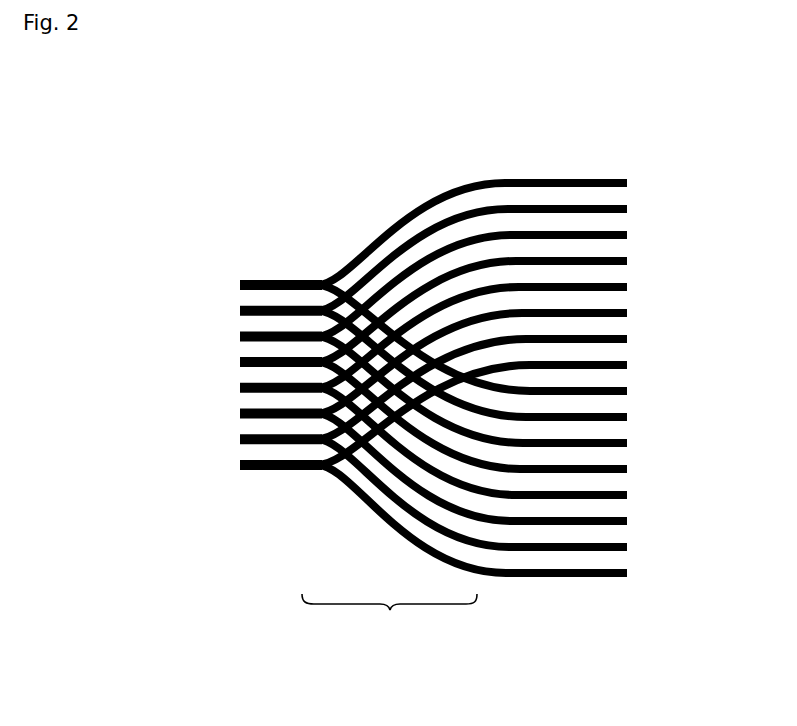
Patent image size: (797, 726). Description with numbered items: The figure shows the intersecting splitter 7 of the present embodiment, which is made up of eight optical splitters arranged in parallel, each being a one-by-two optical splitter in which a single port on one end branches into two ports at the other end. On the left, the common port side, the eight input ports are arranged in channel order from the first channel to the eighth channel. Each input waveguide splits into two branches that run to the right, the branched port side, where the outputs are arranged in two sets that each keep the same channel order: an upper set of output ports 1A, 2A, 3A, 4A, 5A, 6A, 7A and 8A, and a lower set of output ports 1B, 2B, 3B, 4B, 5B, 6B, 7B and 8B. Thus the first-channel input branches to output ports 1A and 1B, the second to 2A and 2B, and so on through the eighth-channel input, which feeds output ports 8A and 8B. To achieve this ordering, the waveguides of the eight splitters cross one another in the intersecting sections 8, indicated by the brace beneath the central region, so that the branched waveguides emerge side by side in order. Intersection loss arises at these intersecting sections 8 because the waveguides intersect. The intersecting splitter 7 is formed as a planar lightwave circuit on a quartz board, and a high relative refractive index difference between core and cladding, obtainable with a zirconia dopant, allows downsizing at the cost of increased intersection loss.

The intersecting splitter 7 is at (438, 339).
The intersecting sections 8 is at (391, 611).
The output waveguide Port1A 1A is at (510, 228).
The output waveguide Port1B 1B is at (510, 344).
The output waveguide Port2A 2A is at (510, 254).
The output waveguide Port2B 2B is at (510, 370).
The output waveguide Port3A 3A is at (510, 280).
The output waveguide Port3B 3B is at (510, 396).
The output waveguide Port4A 4A is at (510, 306).
The output waveguide Port4B 4B is at (510, 422).
The output waveguide Port5A 5A is at (510, 332).
The output waveguide Port5B 5B is at (510, 448).
The output waveguide Port6A 6A is at (510, 358).
The output waveguide Port6B 6B is at (510, 474).
The output waveguide Port7A 7A is at (510, 383).
The output waveguide Port7B 7B is at (510, 499).
The output waveguide Port8A 8A is at (510, 409).
The output waveguide Port8B 8B is at (510, 525).